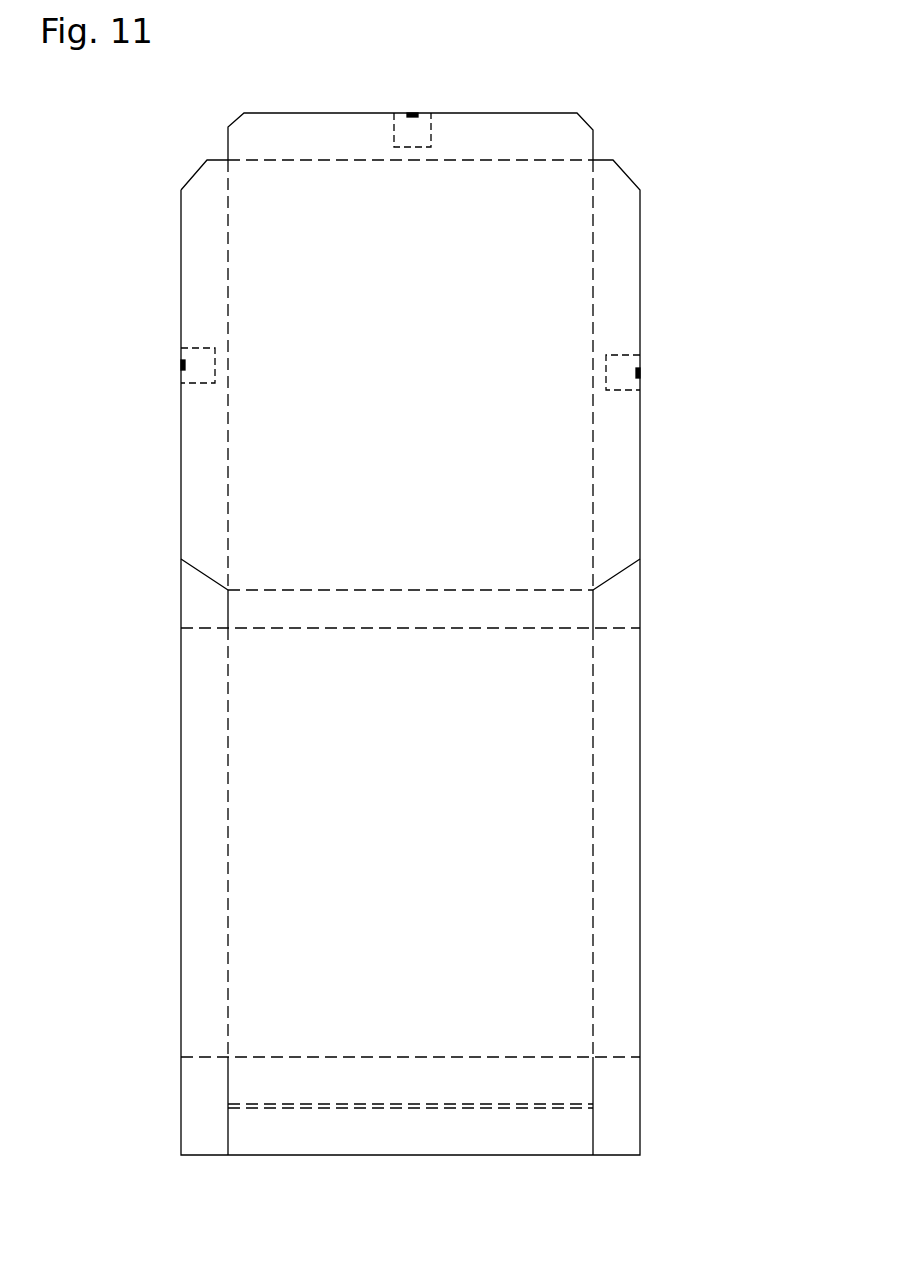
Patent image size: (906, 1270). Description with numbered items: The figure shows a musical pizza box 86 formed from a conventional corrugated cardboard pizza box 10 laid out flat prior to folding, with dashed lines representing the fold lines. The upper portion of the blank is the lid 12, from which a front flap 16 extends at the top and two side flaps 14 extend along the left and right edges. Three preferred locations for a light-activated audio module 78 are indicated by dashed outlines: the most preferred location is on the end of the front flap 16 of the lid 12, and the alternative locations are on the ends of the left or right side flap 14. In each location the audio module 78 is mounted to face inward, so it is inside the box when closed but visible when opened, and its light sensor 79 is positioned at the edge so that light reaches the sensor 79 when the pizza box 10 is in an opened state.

The pizza box 10 is at (640, 935).
The lid 12 is at (413, 375).
The side flaps 14 is at (195, 427).
The front flap 16 is at (513, 120).
The light-activated audio module 78 is at (408, 133).
The light sensor 79 is at (413, 112).
The musical pizza box 86 is at (738, 160).